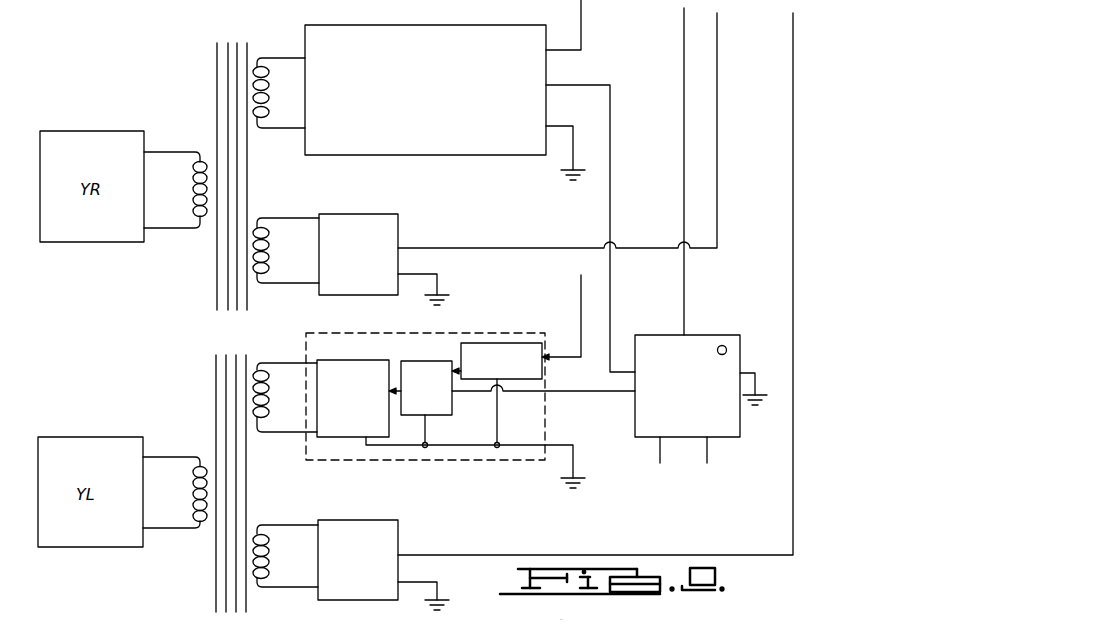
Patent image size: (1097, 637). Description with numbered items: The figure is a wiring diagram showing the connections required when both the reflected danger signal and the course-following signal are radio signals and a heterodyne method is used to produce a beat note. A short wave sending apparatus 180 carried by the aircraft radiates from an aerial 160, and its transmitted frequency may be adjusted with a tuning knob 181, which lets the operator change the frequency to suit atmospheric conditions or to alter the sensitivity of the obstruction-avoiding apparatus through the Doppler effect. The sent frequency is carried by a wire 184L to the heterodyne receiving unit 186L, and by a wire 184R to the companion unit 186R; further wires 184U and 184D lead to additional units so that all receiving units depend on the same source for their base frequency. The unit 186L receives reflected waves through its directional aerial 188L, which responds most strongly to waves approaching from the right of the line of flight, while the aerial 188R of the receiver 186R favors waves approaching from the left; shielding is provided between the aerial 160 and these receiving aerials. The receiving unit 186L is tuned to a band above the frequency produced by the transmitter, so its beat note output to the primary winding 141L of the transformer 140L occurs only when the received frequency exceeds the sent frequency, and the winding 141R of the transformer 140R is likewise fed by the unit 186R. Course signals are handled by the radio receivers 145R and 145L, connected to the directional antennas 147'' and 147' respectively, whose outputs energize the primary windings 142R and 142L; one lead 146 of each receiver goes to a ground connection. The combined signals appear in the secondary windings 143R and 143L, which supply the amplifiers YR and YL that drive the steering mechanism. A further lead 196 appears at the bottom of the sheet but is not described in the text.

The transformer 140R is at (218, 267).
The transformer 140L is at (216, 593).
The primary winding 141R is at (259, 58).
The primary winding 141L is at (258, 363).
The primary winding 142R is at (258, 283).
The primary winding 142L is at (258, 587).
The secondary winding 143R is at (206, 152).
The secondary winding 143L is at (204, 457).
The radio receiver 145R is at (358, 254).
The radio receiver 145L is at (358, 560).
The lead 146 is at (440, 277).
The directional radio antenna 147' is at (595, 284).
The directional radio antenna 147'' is at (582, 130).
The aerial 160 is at (684, 52).
The short wave sending apparatus 180 is at (687, 386).
The tuning knob 181 is at (726, 346).
The wire 184R is at (611, 300).
The wire 184L is at (552, 393).
The wire 184U is at (659, 455).
The wire 184D is at (708, 456).
The heterodyne receiving unit 186R is at (425, 90).
The heterodyne receiving unit 186L is at (470, 460).
The aerial 188R is at (582, 18).
The aerial 188L is at (580, 300).
The lead 196 is at (494, 628).